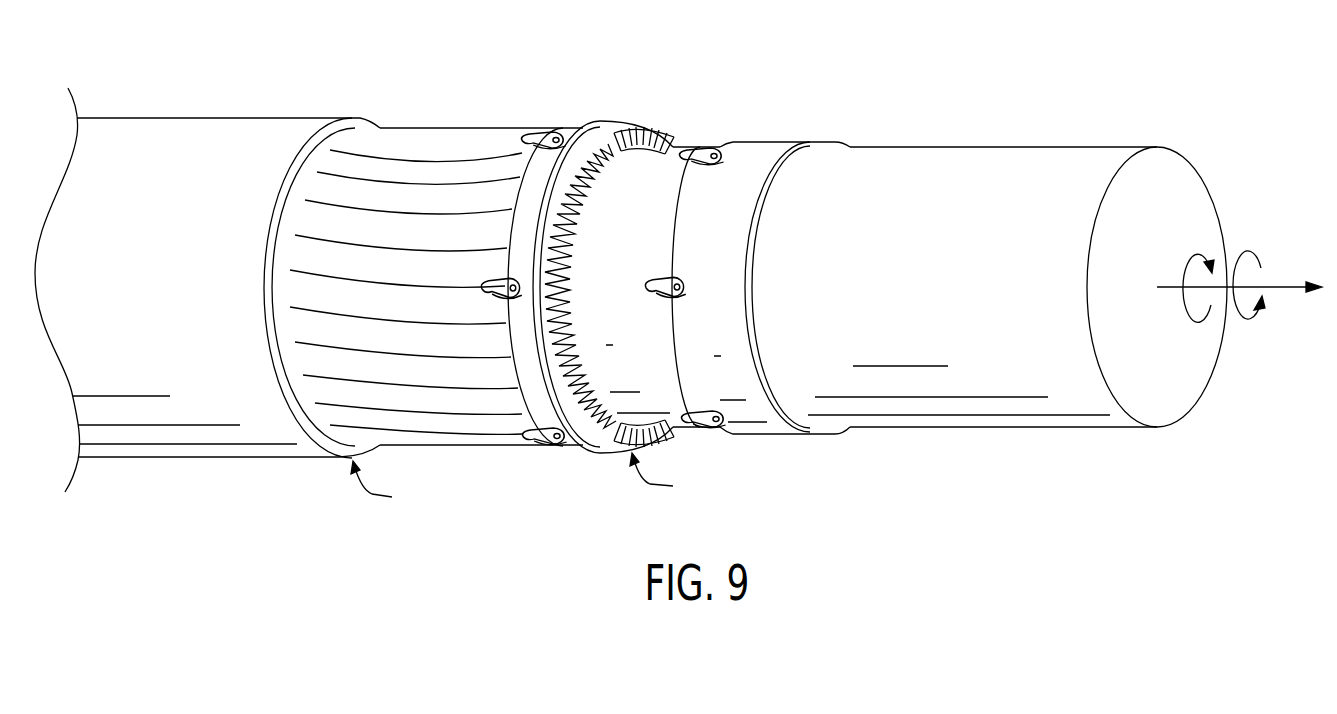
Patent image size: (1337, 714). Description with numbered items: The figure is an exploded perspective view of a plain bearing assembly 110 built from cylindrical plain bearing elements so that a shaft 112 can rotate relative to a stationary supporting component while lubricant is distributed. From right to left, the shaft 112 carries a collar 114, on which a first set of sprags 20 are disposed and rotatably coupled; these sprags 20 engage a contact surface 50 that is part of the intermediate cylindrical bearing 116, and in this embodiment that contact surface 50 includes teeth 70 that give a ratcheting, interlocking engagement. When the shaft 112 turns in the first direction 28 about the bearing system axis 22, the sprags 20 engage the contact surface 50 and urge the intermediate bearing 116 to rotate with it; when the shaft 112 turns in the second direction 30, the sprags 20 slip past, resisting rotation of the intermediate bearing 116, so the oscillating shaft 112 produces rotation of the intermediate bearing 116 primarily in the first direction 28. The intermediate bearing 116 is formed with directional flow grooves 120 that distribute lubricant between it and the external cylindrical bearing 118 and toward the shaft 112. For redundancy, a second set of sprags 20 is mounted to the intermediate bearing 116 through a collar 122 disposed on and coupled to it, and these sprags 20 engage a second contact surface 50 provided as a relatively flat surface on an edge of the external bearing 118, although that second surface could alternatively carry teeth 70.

The plain bearing assembly 110 is at (1014, 95).
The shaft 112 is at (968, 146).
The collar 114 is at (780, 141).
The intermediate cylindrical bearing 116 is at (478, 446).
The external cylindrical bearing 118 is at (215, 117).
The directional flow grooves 120 is at (417, 187).
The collar 122 is at (603, 453).
The teeth 70 is at (585, 134).
The sprags 20 is at (540, 133).
The contact surface 50 is at (525, 483).
The bearing system axis 22 is at (1296, 289).
The first direction 28 is at (1194, 252).
The second direction 30 is at (1249, 320).